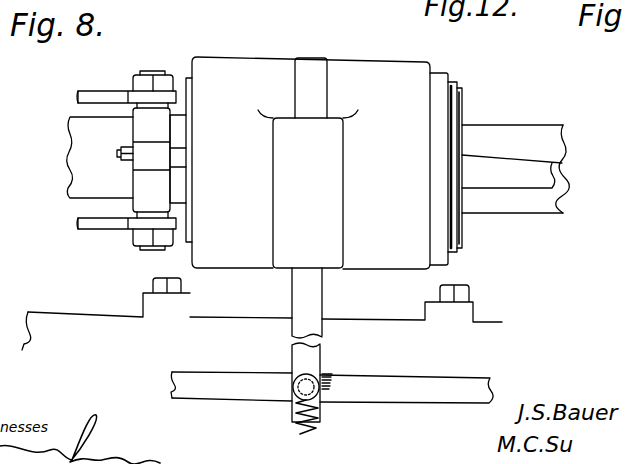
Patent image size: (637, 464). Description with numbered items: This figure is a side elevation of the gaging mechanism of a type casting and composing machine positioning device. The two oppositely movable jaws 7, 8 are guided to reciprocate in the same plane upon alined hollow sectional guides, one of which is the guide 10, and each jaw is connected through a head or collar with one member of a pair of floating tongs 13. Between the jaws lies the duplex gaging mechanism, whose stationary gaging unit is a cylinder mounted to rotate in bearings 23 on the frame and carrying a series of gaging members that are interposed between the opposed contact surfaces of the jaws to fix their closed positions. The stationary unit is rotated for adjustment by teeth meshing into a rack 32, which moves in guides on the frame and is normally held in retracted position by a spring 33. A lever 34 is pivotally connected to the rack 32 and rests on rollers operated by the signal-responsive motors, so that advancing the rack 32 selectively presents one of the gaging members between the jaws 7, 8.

The jaw 7 is at (182, 158).
The jaw 8 is at (527, 183).
The hollow sectional guide 10 is at (517, 130).
The floating tongs 13 is at (107, 86).
The bearings 23 is at (347, 66).
The rack 32 is at (335, 292).
The spring 33 is at (316, 426).
The lever 34 is at (422, 397).